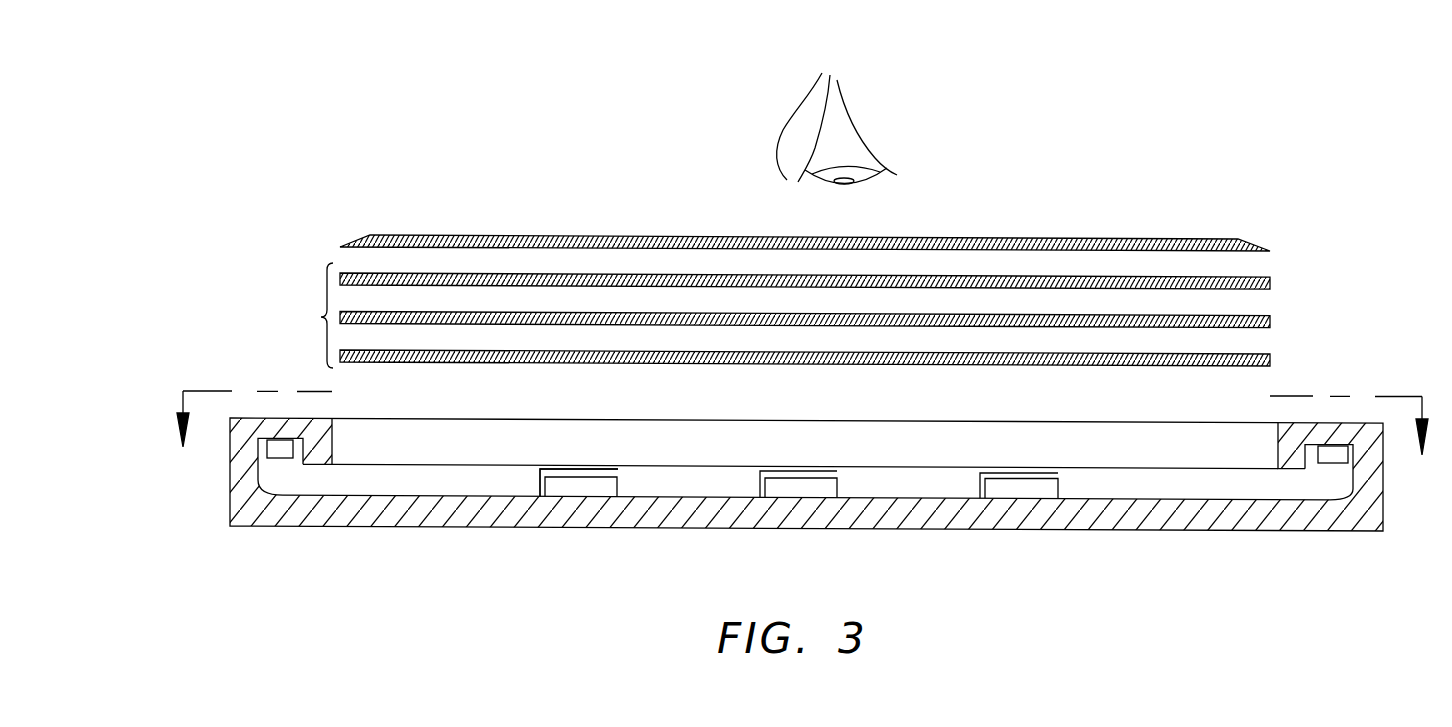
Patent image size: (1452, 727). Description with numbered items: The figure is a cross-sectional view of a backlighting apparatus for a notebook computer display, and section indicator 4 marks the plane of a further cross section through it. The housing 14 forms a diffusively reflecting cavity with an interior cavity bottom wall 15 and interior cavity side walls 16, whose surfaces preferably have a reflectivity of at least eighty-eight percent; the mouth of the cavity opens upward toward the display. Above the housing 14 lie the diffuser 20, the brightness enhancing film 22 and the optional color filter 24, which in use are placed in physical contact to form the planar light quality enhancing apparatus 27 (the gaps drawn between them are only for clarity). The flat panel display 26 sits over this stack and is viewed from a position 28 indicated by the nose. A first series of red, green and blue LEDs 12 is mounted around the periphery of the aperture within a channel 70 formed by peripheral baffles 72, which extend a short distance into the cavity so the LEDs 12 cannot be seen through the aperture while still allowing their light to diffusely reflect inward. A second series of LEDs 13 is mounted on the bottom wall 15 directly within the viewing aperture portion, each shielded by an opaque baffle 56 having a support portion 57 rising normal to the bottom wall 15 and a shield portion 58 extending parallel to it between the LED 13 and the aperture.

The section line 4- 4 is at (802, 423).
The first series of red, green and blue LEDs 12 is at (272, 452).
The second series of red, green and blue LEDs 13 is at (583, 488).
The housing 14 is at (230, 497).
The interior cavity bottom wall 15 is at (487, 490).
The interior cavity side walls 16 is at (272, 483).
The diffuser 20 is at (1260, 353).
The brightness enhancing film 22 is at (1260, 316).
The color filter 24 is at (1260, 278).
The flat panel display 26 is at (1227, 239).
The light quality enhancing apparatus 27 is at (311, 315).
The viewing position 28 is at (860, 78).
The opaque baffle 56 is at (526, 474).
The support portion 57 is at (512, 494).
The shield portion 58 is at (572, 470).
The channel 70 is at (297, 447).
The peripheral baffles 72 is at (320, 432).